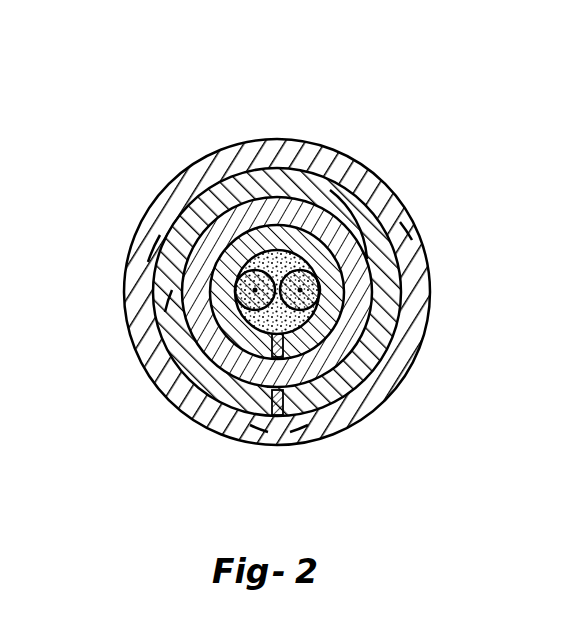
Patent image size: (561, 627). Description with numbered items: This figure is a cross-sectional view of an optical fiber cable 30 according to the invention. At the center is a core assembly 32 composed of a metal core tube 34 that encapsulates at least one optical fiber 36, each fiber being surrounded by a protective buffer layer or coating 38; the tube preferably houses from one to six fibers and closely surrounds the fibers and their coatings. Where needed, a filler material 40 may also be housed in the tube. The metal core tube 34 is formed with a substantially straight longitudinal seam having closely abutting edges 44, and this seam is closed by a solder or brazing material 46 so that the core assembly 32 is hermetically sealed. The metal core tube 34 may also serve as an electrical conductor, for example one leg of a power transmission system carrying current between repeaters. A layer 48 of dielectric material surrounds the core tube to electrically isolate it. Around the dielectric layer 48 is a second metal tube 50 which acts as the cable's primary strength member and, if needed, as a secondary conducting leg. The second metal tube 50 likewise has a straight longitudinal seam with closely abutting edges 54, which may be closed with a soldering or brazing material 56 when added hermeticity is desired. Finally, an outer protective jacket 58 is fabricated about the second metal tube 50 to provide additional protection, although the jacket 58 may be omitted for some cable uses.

The optical fiber cable 30 is at (147, 185).
The core assembly 32 is at (298, 222).
The metal core tube 34 is at (340, 287).
The optical fiber 36 is at (156, 262).
The protective buffer layer or coating 38 is at (170, 312).
The filler material 40 is at (338, 200).
The closely abutting edges 44 is at (164, 387).
The solder or brazing material 46 is at (320, 378).
The layer of dielectric material 48 is at (273, 207).
The second metal tube 50 is at (230, 185).
The closely abutting edges 54 is at (262, 422).
The soldering or brazing material 56 is at (278, 418).
The outer protective jacket 58 is at (196, 178).